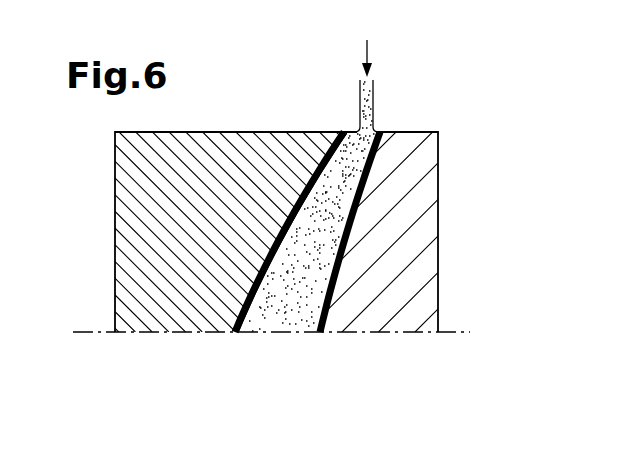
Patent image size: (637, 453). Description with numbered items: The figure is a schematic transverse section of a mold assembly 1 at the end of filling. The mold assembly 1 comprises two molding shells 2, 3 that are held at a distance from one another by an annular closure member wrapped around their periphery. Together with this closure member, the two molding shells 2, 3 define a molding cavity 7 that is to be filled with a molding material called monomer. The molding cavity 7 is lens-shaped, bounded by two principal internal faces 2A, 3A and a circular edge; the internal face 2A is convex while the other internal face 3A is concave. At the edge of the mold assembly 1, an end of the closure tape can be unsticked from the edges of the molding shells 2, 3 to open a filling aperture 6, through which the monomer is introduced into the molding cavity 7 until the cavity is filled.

The mold assembly 1 is at (452, 203).
The molding shell 2 is at (439, 157).
The molding shell 3 is at (115, 168).
The internal face 2A is at (318, 303).
The internal face 3A is at (255, 283).
The filling aperture 6 is at (380, 132).
The molding cavity 7 is at (237, 313).